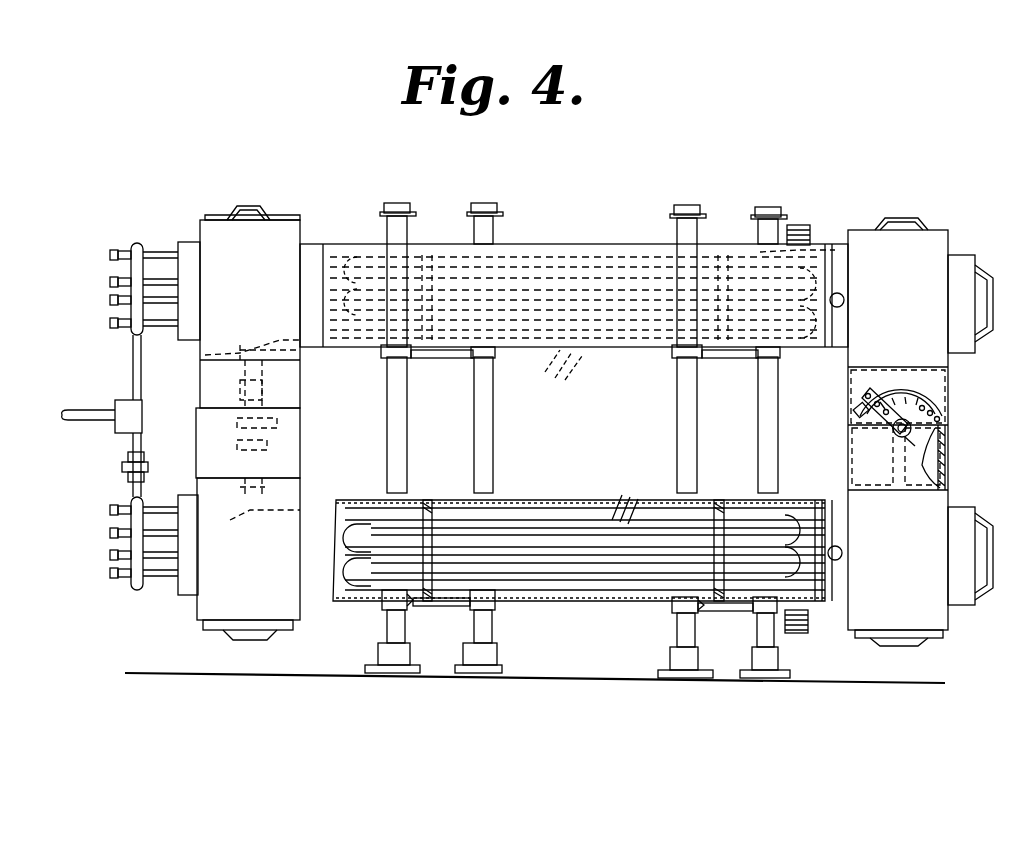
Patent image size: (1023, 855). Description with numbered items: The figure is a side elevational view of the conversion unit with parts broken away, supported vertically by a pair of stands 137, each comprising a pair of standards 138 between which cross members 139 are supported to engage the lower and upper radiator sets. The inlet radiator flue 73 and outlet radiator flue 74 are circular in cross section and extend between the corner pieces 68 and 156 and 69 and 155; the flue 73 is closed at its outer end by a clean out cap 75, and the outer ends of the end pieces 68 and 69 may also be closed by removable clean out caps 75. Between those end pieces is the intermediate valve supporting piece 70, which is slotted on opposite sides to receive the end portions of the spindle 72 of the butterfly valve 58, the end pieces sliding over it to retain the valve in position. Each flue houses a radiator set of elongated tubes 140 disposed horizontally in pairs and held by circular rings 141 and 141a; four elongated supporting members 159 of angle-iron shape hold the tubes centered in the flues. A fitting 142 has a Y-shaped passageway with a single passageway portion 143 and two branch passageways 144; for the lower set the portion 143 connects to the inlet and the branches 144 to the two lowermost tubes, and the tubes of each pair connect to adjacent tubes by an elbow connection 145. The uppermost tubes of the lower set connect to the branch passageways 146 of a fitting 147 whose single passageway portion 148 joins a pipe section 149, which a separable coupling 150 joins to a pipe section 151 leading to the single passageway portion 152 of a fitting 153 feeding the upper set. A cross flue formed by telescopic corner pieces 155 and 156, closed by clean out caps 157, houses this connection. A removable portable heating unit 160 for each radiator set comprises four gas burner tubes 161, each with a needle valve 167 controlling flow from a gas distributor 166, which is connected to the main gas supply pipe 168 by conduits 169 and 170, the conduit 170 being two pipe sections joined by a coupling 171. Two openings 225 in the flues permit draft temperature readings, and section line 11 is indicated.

The section line 11 is at (747, 640).
The butterfly valve 58 is at (945, 425).
The end or corner piece 68 is at (949, 258).
The end or corner piece 69 is at (950, 612).
The intermediate valve supporting piece 70 is at (946, 440).
The spindle 72 is at (925, 230).
The inlet radiator flue 73 is at (614, 244).
The outlet radiator flue 74 is at (558, 612).
The clean out cap 75 is at (985, 272).
The stand 137 is at (670, 692).
The standard 138 is at (476, 433).
The cross member 139 is at (432, 360).
The elongated tube 140 is at (625, 389).
The circular ring 141 is at (660, 347).
The circular ring 141a is at (418, 565).
The fitting 142 is at (846, 252).
The single passageway portion 143 is at (812, 226).
The branch passageway 144 is at (840, 290).
The elbow connection 145 is at (345, 300).
The branch passageway 146 is at (248, 420).
The fitting 147 is at (252, 529).
The single passageway portion 148 is at (290, 490).
The pipe section 149 is at (300, 460).
The separable coupling 150 is at (277, 440).
The pipe section 151 is at (300, 392).
The single passageway portion 152 is at (300, 358).
The fitting 153 is at (205, 356).
The telescopic corner or end piece 155 is at (192, 460).
The telescopic corner or end piece 156 is at (200, 393).
The clean out cap 157 is at (275, 221).
The elongated supporting member 159 is at (506, 505).
The removable portable heating unit 160 is at (120, 293).
The gas burner tube 161 is at (167, 586).
The gas distributor 166 is at (130, 590).
The needle valve 167 is at (112, 563).
The main gas supply pipe 168 is at (91, 428).
The conduit 169 is at (133, 365).
The conduit 170 is at (132, 450).
The coupling 171 is at (125, 470).
The opening 225 is at (845, 300).